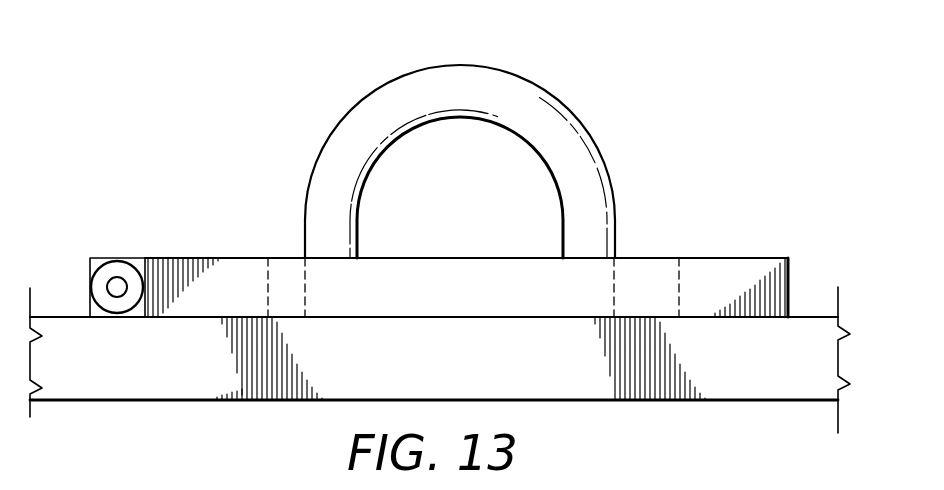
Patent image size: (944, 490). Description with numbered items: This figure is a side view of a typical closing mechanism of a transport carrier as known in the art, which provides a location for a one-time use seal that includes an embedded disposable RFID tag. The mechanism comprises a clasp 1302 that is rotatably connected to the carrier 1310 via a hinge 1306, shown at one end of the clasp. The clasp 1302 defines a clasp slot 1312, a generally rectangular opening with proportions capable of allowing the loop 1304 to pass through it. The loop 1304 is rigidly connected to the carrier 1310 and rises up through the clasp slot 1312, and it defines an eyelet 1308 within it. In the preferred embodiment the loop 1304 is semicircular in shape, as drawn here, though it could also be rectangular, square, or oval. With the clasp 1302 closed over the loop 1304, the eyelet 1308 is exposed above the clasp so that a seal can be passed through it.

The clasp 1302 is at (790, 276).
The loop 1304 is at (530, 80).
The hinge 1306 is at (100, 258).
The eyelet 1308 is at (388, 150).
The carrier 1310 is at (752, 401).
The clasp slot 1312 is at (679, 277).